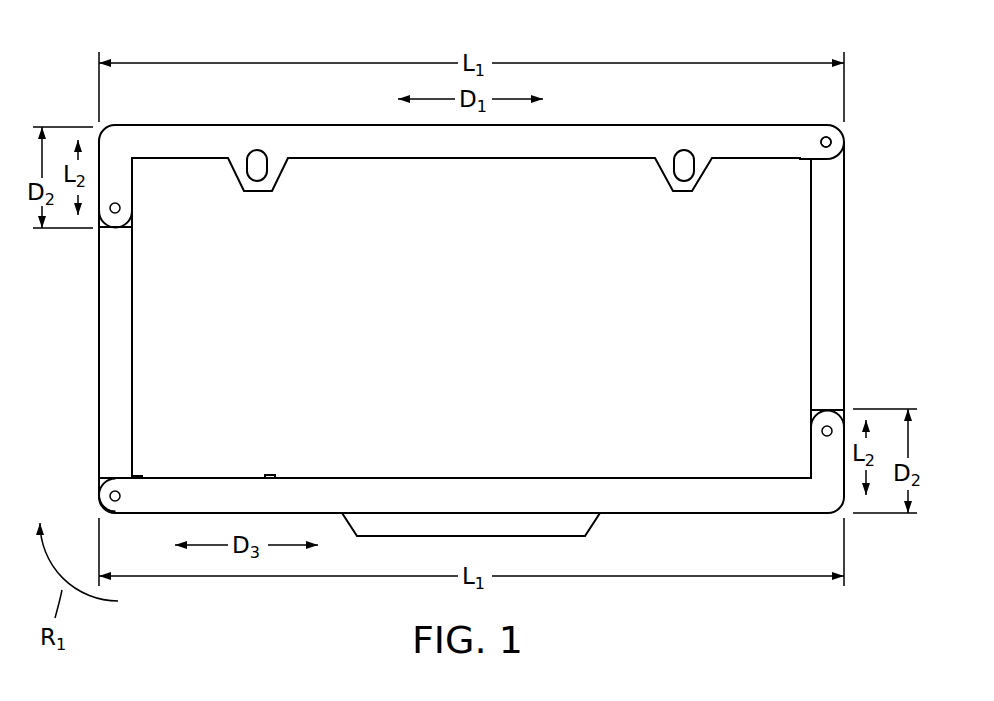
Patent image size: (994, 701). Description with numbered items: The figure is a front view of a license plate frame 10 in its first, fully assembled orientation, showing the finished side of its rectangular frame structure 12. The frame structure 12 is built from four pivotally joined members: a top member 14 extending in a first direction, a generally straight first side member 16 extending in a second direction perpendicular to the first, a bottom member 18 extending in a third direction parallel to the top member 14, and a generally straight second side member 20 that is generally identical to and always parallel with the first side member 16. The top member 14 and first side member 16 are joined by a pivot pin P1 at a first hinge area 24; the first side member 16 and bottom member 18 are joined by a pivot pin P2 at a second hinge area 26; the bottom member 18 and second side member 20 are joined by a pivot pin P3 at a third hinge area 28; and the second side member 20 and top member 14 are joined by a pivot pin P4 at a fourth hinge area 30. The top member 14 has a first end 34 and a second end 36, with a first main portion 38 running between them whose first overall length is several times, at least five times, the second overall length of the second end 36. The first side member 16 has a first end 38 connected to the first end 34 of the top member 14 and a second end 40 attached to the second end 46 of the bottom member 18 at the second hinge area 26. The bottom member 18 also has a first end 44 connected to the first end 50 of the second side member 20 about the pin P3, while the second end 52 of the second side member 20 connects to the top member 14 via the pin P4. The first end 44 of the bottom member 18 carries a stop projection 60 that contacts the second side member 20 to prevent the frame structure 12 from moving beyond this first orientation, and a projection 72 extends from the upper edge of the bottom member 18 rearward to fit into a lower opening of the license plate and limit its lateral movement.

The license plate frame 10 is at (704, 34).
The frame structure 12 is at (318, 120).
The top member 14 is at (617, 125).
The first side member 16 is at (827, 285).
The bottom member 18 is at (309, 497).
The second side member 20 is at (115, 352).
The first hinge area 24 is at (825, 141).
The second hinge area 26 is at (827, 430).
The third hinge area 28 is at (109, 493).
The fourth hinge area 30 is at (121, 217).
The first end of the top member 34 is at (812, 138).
The second end of the top member 36 is at (117, 184).
The first end of the first side member 38 is at (822, 172).
The second end of the first side member 40 is at (828, 404).
The first end of the bottom member 44 is at (131, 500).
The second end of the bottom member 46 is at (828, 455).
The first end of the second side member 50 is at (112, 234).
The second end of the second side member 52 is at (115, 466).
The stop projection 60 is at (139, 477).
The projection 72 is at (268, 475).
The pivot pin P1 is at (840, 148).
The pivot pin P2 is at (822, 433).
The pivot pin P3 is at (110, 492).
The pivot pin P4 is at (122, 206).